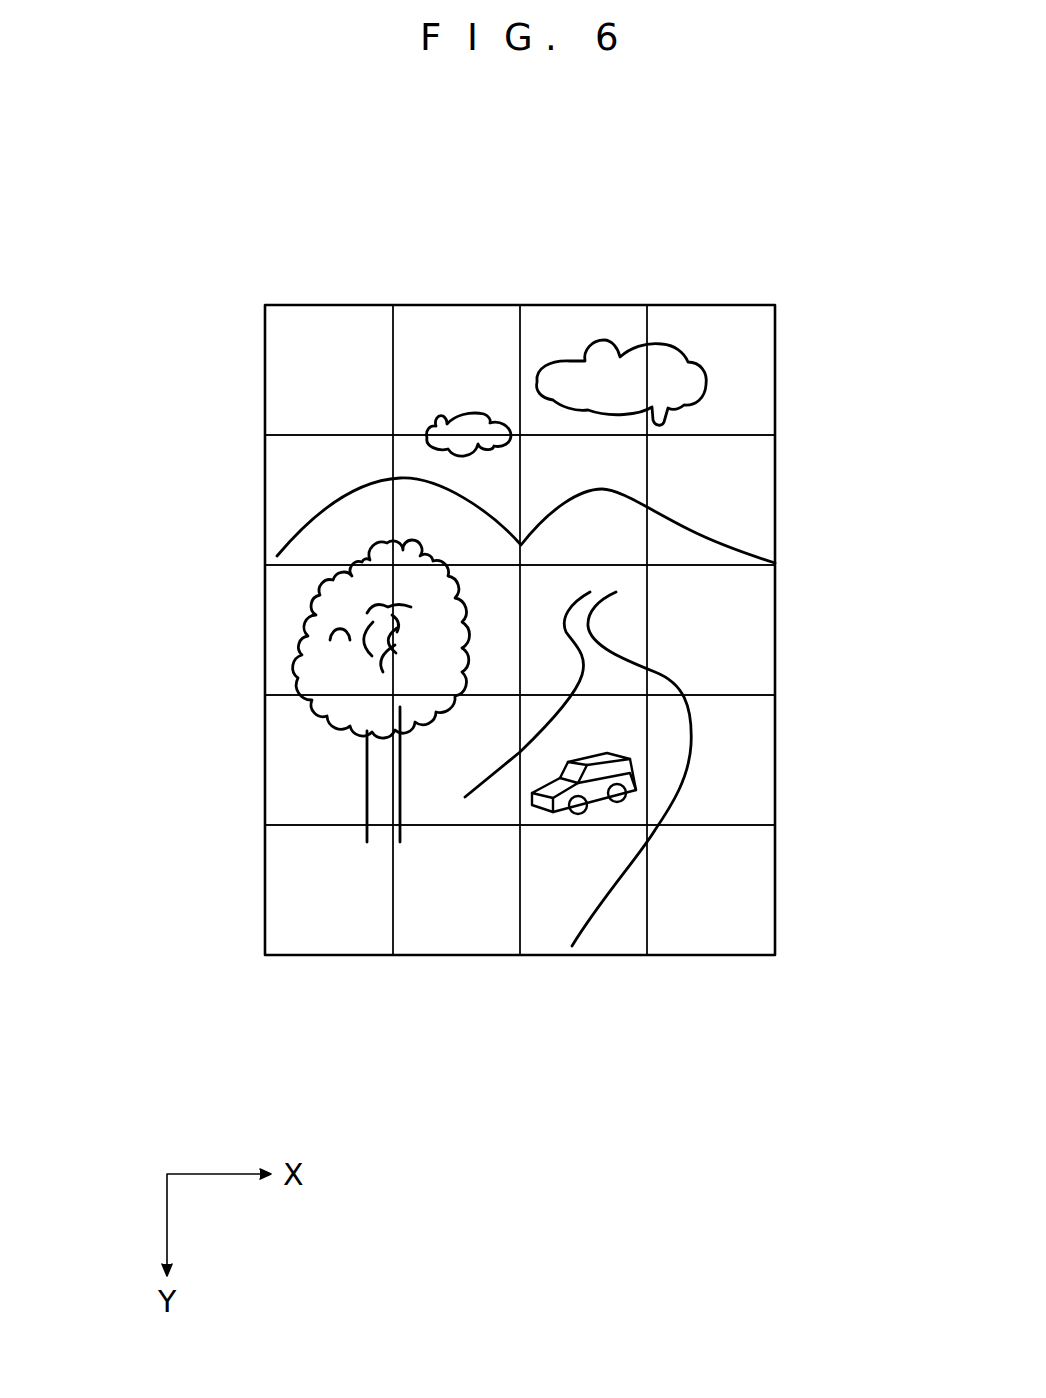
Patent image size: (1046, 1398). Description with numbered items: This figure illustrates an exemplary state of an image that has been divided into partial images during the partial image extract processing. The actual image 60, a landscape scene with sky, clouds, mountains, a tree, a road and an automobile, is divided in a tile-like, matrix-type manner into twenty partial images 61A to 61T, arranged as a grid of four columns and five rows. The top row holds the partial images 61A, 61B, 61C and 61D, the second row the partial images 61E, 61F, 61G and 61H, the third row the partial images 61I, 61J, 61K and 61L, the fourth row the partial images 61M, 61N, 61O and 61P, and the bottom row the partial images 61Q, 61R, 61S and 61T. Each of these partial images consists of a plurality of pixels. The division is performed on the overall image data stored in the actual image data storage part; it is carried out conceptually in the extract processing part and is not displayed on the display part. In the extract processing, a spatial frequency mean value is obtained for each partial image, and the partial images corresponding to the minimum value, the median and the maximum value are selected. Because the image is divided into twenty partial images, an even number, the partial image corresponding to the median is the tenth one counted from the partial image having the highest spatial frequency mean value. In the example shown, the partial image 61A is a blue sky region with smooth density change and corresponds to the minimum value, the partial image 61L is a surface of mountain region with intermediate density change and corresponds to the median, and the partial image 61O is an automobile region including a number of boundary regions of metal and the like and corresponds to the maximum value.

The actual image 60 is at (487, 305).
The partial image 61A is at (308, 327).
The partial image 61B is at (415, 316).
The partial image 61C is at (570, 316).
The partial image 61D is at (720, 316).
The partial image 61E is at (283, 460).
The partial image 61F is at (408, 462).
The partial image 61G is at (625, 460).
The partial image 61H is at (753, 525).
The partial image 61I is at (283, 596).
The partial image 61J is at (405, 606).
The partial image 61K is at (622, 602).
The partial image 61L is at (753, 657).
The partial image 61M is at (283, 735).
The partial image 61N is at (418, 745).
The partial image 61O is at (625, 733).
The partial image 61P is at (753, 805).
The partial image 61Q is at (295, 915).
The partial image 61R is at (440, 943).
The partial image 61S is at (580, 943).
The partial image 61T is at (725, 943).